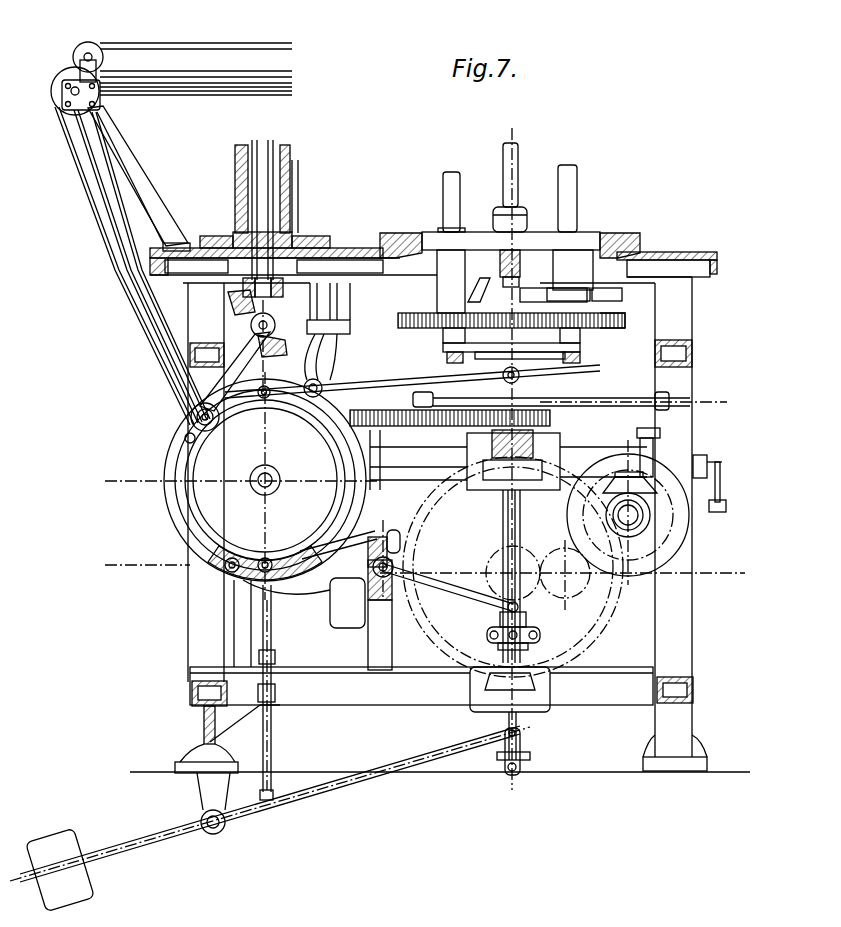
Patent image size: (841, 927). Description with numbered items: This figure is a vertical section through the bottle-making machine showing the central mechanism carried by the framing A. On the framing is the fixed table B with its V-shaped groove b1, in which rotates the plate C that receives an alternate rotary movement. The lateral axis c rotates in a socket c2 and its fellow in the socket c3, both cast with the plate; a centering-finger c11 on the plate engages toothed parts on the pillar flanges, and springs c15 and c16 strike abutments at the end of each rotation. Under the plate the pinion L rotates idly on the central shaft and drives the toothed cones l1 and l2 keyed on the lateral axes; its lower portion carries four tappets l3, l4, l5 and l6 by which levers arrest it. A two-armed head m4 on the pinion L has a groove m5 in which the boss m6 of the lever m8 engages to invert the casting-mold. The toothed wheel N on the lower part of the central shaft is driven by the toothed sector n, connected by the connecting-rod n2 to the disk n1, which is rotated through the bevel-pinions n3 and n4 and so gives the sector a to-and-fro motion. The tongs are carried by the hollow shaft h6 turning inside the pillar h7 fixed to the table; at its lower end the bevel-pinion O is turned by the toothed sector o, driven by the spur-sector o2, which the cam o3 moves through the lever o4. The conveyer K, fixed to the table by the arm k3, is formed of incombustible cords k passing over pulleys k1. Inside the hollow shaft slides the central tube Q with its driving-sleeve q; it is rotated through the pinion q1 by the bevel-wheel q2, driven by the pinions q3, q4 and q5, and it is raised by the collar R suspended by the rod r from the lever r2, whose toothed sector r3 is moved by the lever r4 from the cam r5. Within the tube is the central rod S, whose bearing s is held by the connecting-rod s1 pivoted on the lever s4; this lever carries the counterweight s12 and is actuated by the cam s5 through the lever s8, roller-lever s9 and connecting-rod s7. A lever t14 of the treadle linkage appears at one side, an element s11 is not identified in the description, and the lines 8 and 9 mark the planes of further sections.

The cords k is at (100, 262).
The pulleys k1 is at (72, 58).
The conveyer K is at (139, 178).
The fixed arm k3 is at (133, 193).
The hollow shaft h6 is at (290, 182).
The pillar h7 is at (292, 200).
The fixed table B is at (286, 249).
The plate C is at (600, 236).
The groove b1 is at (643, 243).
The lateral axis c is at (451, 202).
The centering-finger c11 is at (495, 217).
The driving-sleeve q is at (519, 207).
The socket c3 is at (573, 227).
The socket c2 is at (451, 281).
The pinion L is at (527, 295).
The spring c15 is at (580, 293).
The spring c16 is at (612, 296).
The toothed cone l1 is at (397, 323).
The toothed cone l2 is at (626, 321).
The groove m5 is at (548, 397).
The tappet l4 is at (457, 374).
The tappet l5 is at (516, 374).
The tappet l6 is at (580, 372).
The lever m8 is at (412, 376).
The two-armed head m4 is at (519, 361).
The toothed sector n is at (398, 398).
The boss m6 is at (496, 387).
The connecting-rod n2 is at (602, 406).
The section line 8 is at (405, 439).
The section line 9 is at (421, 567).
The tappet l3 is at (460, 420).
The disk n1 is at (609, 410).
The bevel-pinion O is at (272, 289).
The framing A is at (441, 525).
The toothed sector o is at (250, 325).
The spur-sector o2 is at (243, 350).
The lever o4 is at (188, 432).
The cam o3 is at (180, 456).
The cam r5 is at (188, 520).
The cam s5 is at (190, 540).
The lever s8 is at (262, 540).
The lever r4 is at (301, 569).
The roller-lever s9 is at (386, 536).
The toothed sector r3 is at (390, 553).
The lever r2 is at (448, 595).
The small rod r is at (495, 612).
The central rod S is at (498, 644).
The collar R is at (528, 637).
The toothed wheel N is at (513, 460).
The pinion q1 is at (495, 576).
The central tube Q is at (513, 567).
The bevel-wheel q2 is at (415, 523).
The pinion q3 is at (496, 571).
The pinion q4 is at (567, 587).
The pinion q5 is at (655, 567).
The bevel-pinion n4 is at (652, 500).
The bevel-wheel n3 is at (650, 513).
The lever t14 is at (729, 483).
The housing s11 is at (490, 680).
The connecting-rod s7 is at (273, 726).
The lever s4 is at (333, 790).
The counterweight s12 is at (60, 869).
The connecting-rod s1 is at (505, 745).
The bearing s is at (523, 753).